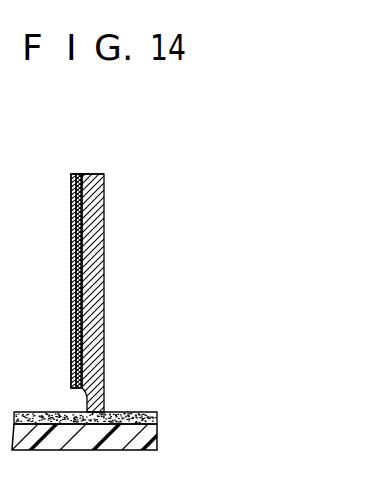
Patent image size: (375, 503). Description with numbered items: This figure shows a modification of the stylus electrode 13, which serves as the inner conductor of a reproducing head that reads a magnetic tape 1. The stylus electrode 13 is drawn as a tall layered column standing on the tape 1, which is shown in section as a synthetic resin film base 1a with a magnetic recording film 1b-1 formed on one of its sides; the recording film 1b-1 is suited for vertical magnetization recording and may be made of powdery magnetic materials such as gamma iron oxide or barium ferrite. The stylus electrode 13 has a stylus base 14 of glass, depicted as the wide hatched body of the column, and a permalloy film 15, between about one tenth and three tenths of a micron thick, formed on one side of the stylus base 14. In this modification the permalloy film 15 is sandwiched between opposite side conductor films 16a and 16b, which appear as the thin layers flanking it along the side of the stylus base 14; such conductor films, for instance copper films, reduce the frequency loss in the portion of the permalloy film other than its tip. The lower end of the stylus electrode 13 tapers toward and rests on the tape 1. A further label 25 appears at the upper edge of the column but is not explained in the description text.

The magnetic tape 1 is at (111, 398).
The synthetic resin film base 1a is at (152, 437).
The magnetic recording film 1b-1 is at (157, 415).
The stylus electrode 13 is at (94, 293).
The stylus base 14 is at (105, 232).
The permalloy film 15 is at (75, 268).
The conductor film 16a is at (82, 348).
The conductor film 16b is at (73, 311).
The top edge 25 is at (52, 217).